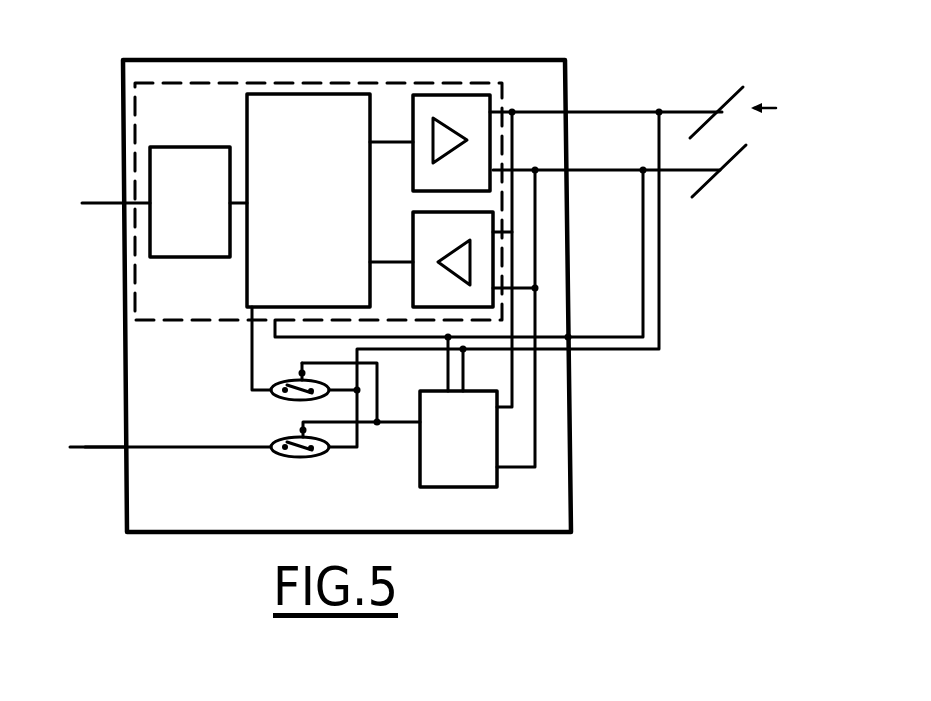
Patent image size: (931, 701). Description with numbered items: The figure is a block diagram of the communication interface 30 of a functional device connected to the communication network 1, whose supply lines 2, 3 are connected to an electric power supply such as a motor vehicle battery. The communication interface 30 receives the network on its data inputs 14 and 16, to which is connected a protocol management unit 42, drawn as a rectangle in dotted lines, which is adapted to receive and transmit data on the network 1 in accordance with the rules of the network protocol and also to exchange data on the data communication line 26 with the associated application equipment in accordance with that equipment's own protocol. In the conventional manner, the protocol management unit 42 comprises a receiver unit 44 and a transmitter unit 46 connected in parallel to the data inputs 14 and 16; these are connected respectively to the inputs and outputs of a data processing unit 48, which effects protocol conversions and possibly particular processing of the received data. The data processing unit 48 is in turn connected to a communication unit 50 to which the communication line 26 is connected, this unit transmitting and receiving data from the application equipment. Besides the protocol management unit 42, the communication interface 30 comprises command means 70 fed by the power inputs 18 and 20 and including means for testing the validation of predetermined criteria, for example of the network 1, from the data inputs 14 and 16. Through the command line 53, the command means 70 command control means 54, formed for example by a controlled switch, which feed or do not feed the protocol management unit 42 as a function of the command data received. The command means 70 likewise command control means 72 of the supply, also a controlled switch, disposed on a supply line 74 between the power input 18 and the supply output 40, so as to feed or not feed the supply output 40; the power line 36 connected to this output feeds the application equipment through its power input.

The communication network 1 is at (772, 102).
The supply line 2 is at (733, 98).
The supply line 3 is at (734, 157).
The data input 14 is at (567, 112).
The data input 16 is at (568, 170).
The power input 18 is at (572, 350).
The power input 20 is at (568, 337).
The data communication line 26 is at (95, 203).
The communication interface 30 is at (413, 60).
The power line 36 is at (85, 447).
The supply output 40 is at (121, 447).
The protocol management unit 42 is at (345, 83).
The receiver unit 44 is at (413, 279).
The transmitter unit 46 is at (413, 153).
The data processing unit 48 is at (294, 94).
The communication unit 50 is at (150, 239).
The command line 53 is at (380, 378).
The control means 54 is at (272, 396).
The command means 70 is at (487, 490).
The control means of the supply 72 is at (304, 458).
The supply line 74 is at (205, 448).